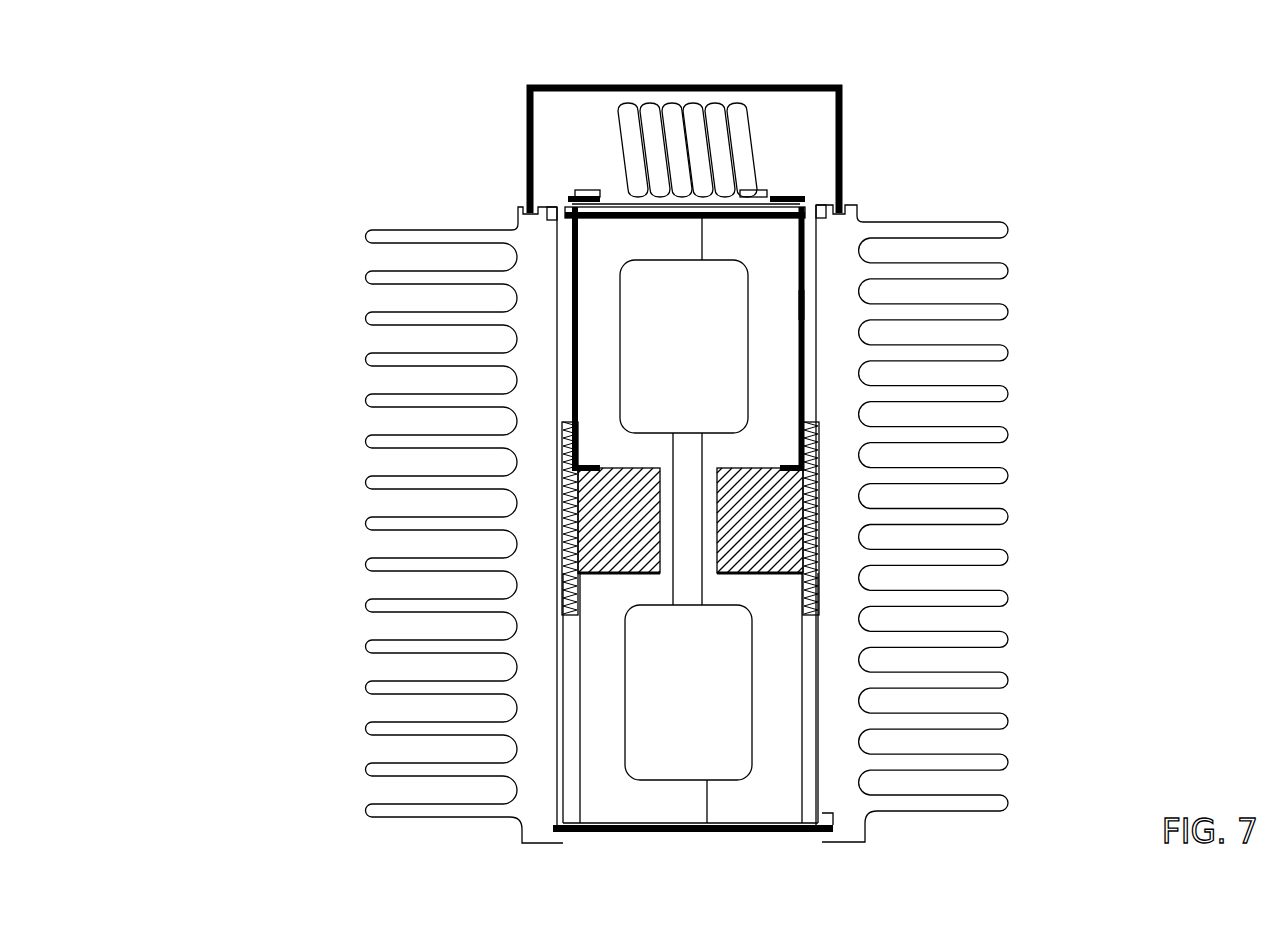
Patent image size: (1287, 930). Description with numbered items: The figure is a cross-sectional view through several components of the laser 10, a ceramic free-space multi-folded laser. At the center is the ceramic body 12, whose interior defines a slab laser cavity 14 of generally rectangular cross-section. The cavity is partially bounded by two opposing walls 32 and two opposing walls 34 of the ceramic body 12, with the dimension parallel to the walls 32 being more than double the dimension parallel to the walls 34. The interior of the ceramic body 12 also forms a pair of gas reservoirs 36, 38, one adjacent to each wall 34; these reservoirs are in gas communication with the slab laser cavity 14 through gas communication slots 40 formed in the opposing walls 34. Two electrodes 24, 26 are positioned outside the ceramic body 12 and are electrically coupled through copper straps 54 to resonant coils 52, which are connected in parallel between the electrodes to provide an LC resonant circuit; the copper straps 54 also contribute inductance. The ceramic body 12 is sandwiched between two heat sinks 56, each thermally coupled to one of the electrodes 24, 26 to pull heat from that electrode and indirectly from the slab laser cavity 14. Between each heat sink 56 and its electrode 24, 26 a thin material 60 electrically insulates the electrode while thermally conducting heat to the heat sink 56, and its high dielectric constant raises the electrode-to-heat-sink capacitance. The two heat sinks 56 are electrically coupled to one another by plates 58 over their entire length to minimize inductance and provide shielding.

The laser 10 is at (393, 155).
The ceramic body 12 is at (600, 275).
The slab laser cavity 14 is at (680, 540).
The electrode 24 is at (603, 527).
The electrode 26 is at (787, 513).
The opposing walls 32 is at (677, 498).
The opposing walls 34 is at (690, 467).
The gas reservoir 36 is at (665, 345).
The gas reservoir 38 is at (668, 733).
The gas communication slots 40 is at (688, 433).
The resonant coils 52 is at (745, 160).
The copper straps 54 is at (800, 305).
The heat sink 56 is at (435, 318).
The plates 58 is at (818, 88).
The thin material 60 is at (562, 425).